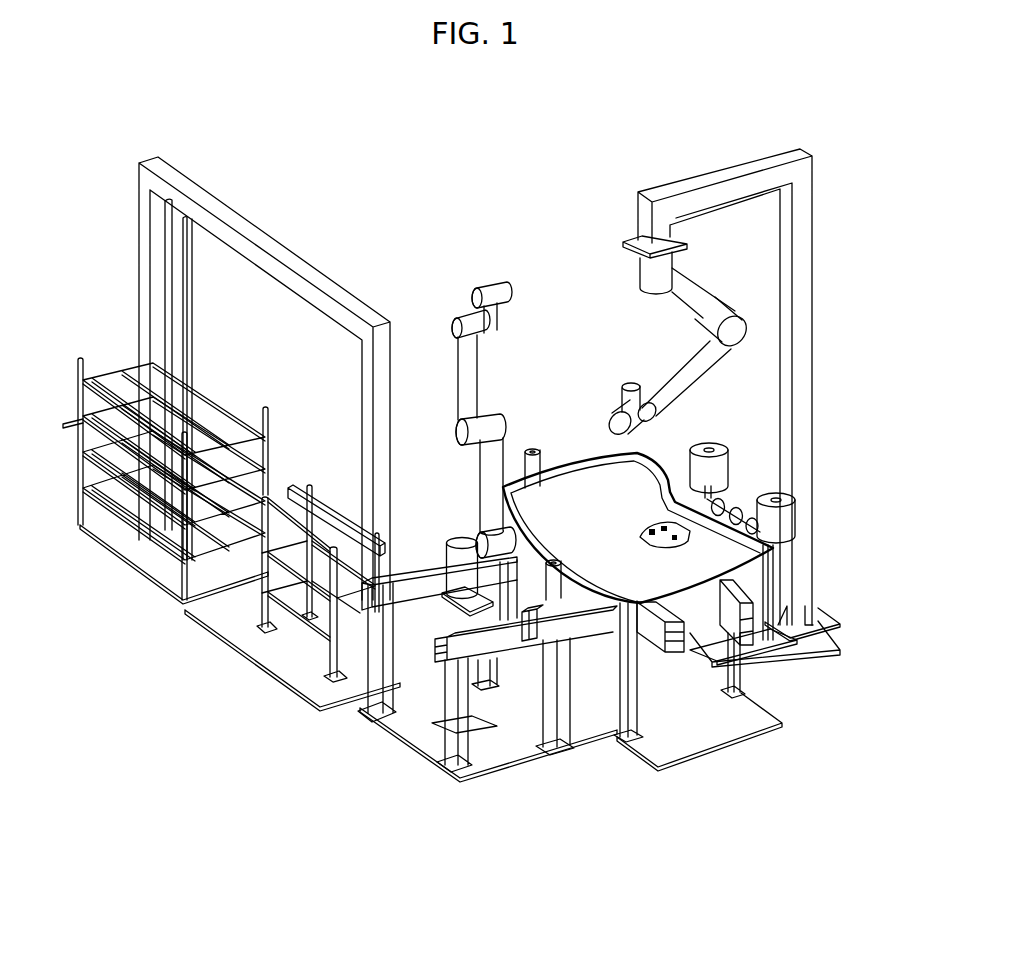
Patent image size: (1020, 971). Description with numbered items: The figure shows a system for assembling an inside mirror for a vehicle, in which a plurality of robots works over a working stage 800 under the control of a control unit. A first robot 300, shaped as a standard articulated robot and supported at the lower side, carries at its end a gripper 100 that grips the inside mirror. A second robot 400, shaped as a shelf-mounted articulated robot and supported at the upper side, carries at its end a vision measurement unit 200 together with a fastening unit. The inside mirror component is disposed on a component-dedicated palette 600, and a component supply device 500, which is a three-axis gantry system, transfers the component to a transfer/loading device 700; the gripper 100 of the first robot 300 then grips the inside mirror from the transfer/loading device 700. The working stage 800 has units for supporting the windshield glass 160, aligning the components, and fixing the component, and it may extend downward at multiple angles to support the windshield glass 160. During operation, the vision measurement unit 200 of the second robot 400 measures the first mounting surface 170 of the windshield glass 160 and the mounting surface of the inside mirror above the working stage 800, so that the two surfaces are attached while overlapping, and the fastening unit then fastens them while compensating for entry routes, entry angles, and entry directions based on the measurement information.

The gripper 100 is at (495, 278).
The vision measurement unit 200 is at (630, 388).
The first robot 300 is at (443, 397).
The second robot 400 is at (697, 367).
The component supply device 500 is at (232, 216).
The component-dedicated palette 600 is at (157, 537).
The transfer/loading device 700 is at (307, 632).
The windshield glass 160 is at (730, 612).
The first mounting surface 170 is at (760, 563).
The working stage 800 is at (679, 672).